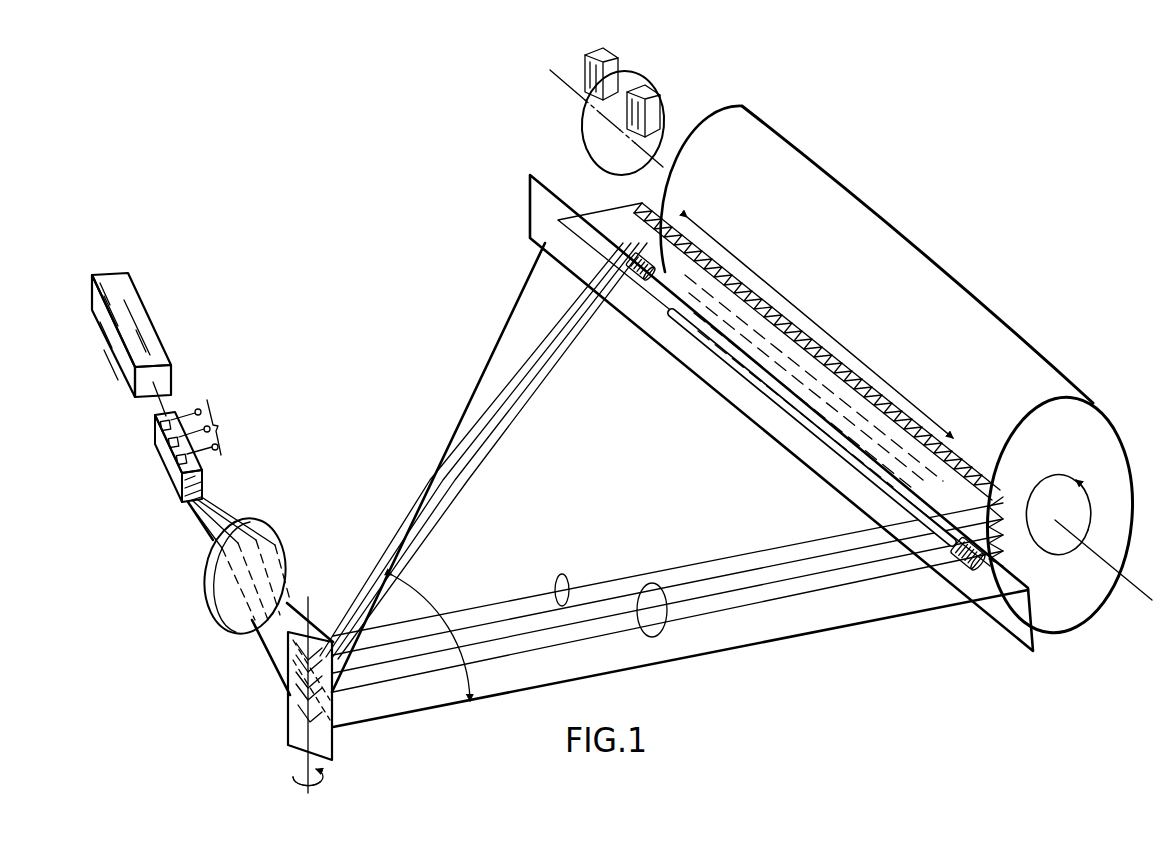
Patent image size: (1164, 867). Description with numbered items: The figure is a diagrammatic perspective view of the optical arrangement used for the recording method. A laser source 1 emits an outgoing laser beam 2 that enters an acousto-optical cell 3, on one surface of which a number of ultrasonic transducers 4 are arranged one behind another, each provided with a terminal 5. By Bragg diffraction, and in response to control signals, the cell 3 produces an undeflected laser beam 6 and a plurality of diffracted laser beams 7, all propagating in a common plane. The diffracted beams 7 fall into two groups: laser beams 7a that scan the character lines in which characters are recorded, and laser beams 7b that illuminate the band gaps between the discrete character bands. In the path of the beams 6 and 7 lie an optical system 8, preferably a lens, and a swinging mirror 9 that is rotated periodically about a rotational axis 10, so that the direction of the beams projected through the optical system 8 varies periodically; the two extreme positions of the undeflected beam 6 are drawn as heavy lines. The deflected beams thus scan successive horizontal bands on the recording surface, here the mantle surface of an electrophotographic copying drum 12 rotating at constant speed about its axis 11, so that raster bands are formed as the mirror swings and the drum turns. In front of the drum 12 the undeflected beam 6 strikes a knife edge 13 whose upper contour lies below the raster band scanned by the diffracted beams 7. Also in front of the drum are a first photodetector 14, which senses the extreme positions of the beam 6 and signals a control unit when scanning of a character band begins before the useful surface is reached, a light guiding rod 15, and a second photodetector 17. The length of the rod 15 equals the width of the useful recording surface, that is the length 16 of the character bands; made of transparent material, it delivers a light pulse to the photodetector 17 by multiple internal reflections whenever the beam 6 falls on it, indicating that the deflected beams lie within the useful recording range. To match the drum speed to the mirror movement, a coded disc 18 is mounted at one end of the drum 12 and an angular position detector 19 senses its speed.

The laser source 1 is at (148, 326).
The outgoing laser beam 2 is at (153, 403).
The acousto-optical cell 3 is at (155, 428).
The ultrasonic transducers 4 is at (176, 462).
The terminal 5 is at (203, 427).
The undeflected laser beam 6 is at (202, 535).
The diffracted laser beams 7 is at (215, 503).
The laser beams for scanning character lines 7a is at (652, 583).
The laser beams for illuminating band gaps 7b is at (562, 574).
The optical system 8 is at (212, 598).
The swinging mirror 9 is at (287, 717).
The rotational axis 10 is at (300, 757).
The axis of the copying drum 11 is at (1130, 592).
The electrophotographic copying drum 12 is at (1072, 632).
The knife edge 13 is at (1005, 638).
The first photodetector 14 is at (632, 278).
The light guiding rod 15 is at (758, 393).
The length of the character bands 16 is at (837, 337).
The second photodetector 17 is at (965, 572).
The coded disc 18 is at (585, 130).
The angular position detector 19 is at (662, 98).